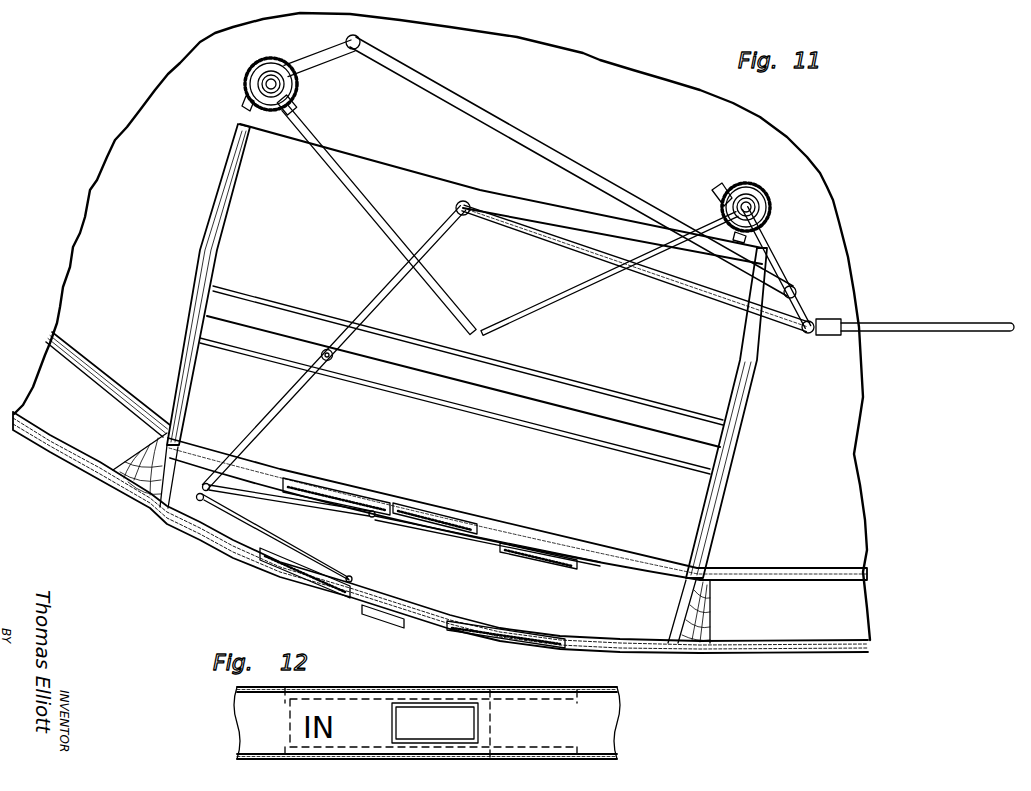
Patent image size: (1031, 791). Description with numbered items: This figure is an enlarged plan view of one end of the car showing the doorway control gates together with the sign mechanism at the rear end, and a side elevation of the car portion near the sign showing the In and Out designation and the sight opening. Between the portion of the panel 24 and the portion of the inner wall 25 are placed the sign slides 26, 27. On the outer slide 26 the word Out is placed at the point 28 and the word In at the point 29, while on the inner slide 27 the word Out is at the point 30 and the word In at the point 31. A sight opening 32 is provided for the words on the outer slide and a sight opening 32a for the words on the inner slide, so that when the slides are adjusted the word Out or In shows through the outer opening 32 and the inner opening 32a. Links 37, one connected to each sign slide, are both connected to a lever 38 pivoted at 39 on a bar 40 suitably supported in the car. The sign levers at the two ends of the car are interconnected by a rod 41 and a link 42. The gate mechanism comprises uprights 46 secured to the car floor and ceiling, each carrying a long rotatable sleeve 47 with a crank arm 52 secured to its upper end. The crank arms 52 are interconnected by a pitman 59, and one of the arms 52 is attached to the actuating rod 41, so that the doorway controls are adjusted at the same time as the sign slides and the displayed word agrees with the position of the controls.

In FIG. 11, the portion of the panel 24 is at (503, 641).
In FIG. 11, the portion of the inner wall 25 is at (551, 533).
In FIG. 11, the sign slide 26 is at (455, 618).
In FIG. 11, the sign slide 27 is at (510, 545).
In FIG. 11, the point 28 is at (394, 618).
In FIG. 11, the point 29 is at (292, 597).
In FIG. 11, the point 30 is at (435, 508).
In FIG. 11, the point 31 is at (318, 478).
In FIG. 11, the sight opening 32 is at (445, 638).
In FIG. 12, the sight opening 32 is at (408, 705).
In FIG. 11, the sight opening 32a is at (468, 517).
In FIG. 11, the links 37 is at (262, 543).
In FIG. 11, the lever 38 is at (289, 407).
In FIG. 11, the pivot 39 is at (329, 348).
In FIG. 11, the bar 40 is at (389, 375).
In FIG. 11, the rod 41 is at (940, 323).
In FIG. 11, the link 42 is at (669, 282).
In FIG. 11, the uprights 46 is at (246, 82).
In FIG. 11, the sleeve 47 is at (258, 63).
In FIG. 11, the crank arms 52 is at (322, 64).
In FIG. 11, the pitman 59 is at (498, 118).